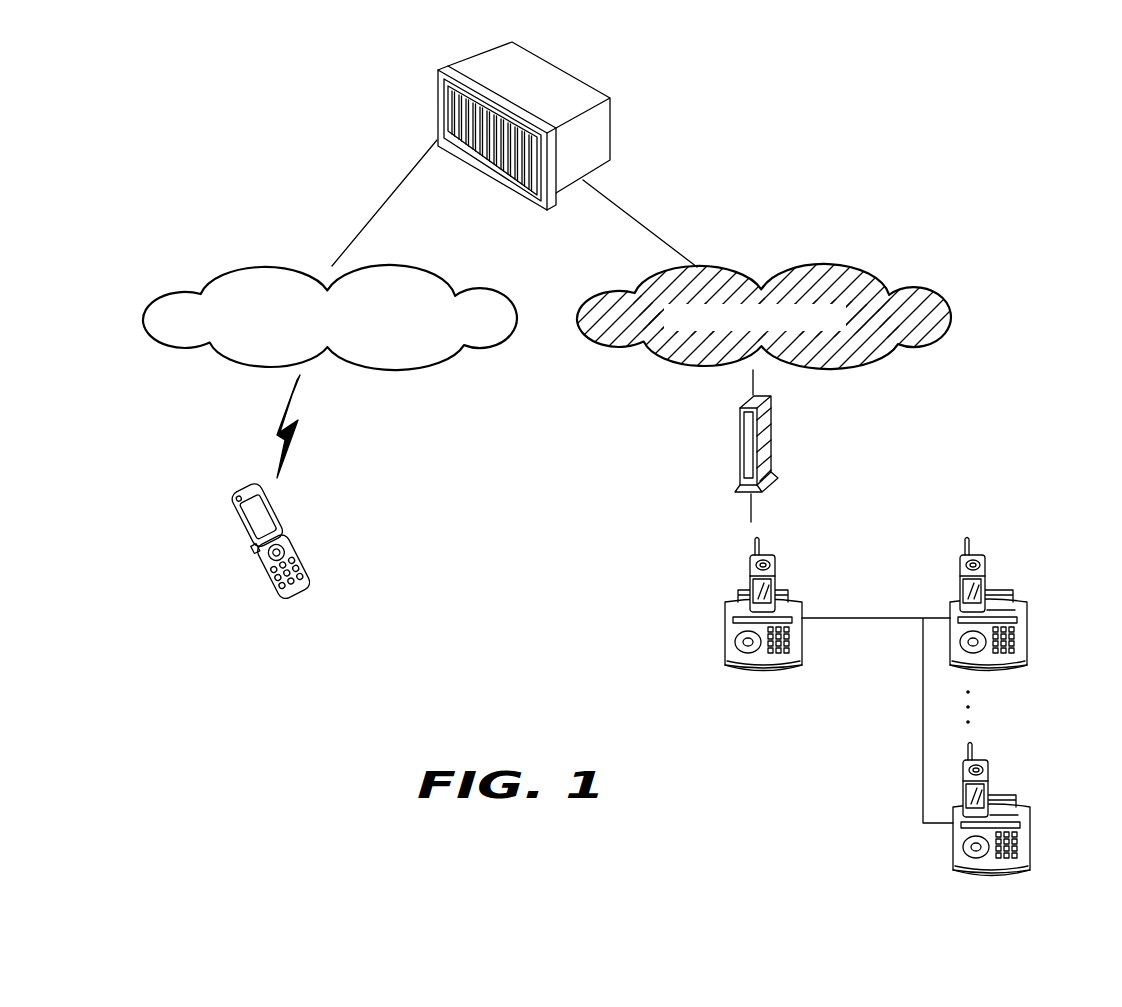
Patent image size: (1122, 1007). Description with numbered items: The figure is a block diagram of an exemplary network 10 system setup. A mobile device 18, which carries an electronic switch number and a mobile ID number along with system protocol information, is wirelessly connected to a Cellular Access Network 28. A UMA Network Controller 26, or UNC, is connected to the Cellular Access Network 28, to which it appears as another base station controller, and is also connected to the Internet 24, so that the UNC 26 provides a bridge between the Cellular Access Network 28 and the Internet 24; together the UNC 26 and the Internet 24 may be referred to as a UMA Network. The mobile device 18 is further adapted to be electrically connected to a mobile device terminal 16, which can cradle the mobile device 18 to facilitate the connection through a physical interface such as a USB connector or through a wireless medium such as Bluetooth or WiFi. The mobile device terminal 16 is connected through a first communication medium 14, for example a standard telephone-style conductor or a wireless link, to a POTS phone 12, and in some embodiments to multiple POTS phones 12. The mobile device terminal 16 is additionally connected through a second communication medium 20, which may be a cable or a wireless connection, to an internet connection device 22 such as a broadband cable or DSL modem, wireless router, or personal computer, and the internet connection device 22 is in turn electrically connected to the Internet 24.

The network 10 is at (182, 152).
The POTS phone 12 is at (1034, 631).
The first communication medium 14 is at (897, 619).
The mobile device terminal 16 is at (757, 673).
The mobile device 18 is at (750, 565).
The second communication medium 20 is at (751, 512).
The internet connection device 22 is at (748, 440).
The Internet 24 is at (823, 266).
The UMA Network Controller 26 is at (567, 67).
The Cellular Access Network 28 is at (266, 267).